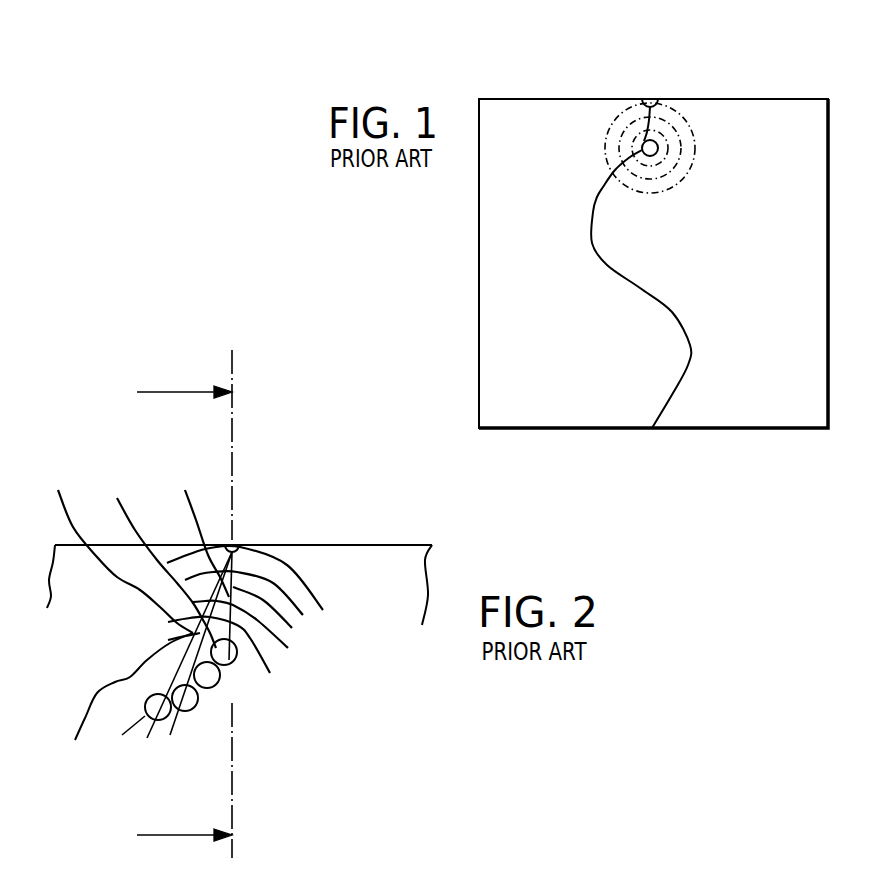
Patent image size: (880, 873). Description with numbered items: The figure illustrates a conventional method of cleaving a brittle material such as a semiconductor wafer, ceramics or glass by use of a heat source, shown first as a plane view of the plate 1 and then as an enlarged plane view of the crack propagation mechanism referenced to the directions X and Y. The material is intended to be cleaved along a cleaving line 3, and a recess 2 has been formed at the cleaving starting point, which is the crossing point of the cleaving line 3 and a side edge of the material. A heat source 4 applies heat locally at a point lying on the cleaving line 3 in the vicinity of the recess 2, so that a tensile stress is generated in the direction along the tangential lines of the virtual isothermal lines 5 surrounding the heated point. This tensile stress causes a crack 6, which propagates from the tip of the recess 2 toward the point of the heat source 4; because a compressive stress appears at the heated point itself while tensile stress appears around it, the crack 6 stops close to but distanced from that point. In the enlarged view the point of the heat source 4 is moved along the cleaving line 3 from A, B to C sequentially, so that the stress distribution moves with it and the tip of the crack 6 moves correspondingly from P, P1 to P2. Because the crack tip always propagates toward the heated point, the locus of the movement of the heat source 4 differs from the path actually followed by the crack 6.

In FIG. 1, the brittle material substrate 1 is at (808, 99).
In FIG. 2, the brittle material substrate 1 is at (412, 545).
In FIG. 1, the recess 2 is at (650, 98).
In FIG. 2, the recess 2 is at (234, 542).
In FIG. 1, the cleaving line 3 is at (600, 188).
In FIG. 2, the cleaving line 3 is at (87, 712).
In FIG. 1, the heat source 4 is at (658, 148).
In FIG. 1, the virtual isothermal lines 5 is at (608, 132).
In FIG. 2, the virtual isothermal lines 5 is at (318, 595).
In FIG. 2, the crack 6 is at (228, 577).
In FIG. 2, the crack tip position P is at (202, 530).
In FIG. 2, the crack tip position P1 is at (158, 556).
In FIG. 2, the crack tip position P2 is at (118, 540).
In FIG. 2, the heat source point position A is at (237, 652).
In FIG. 2, the heat source point position B is at (220, 680).
In FIG. 2, the heat source point position C is at (197, 710).
In FIG. 2, the X axis direction X is at (170, 604).
In FIG. 2, the Y axis direction Y is at (170, 838).